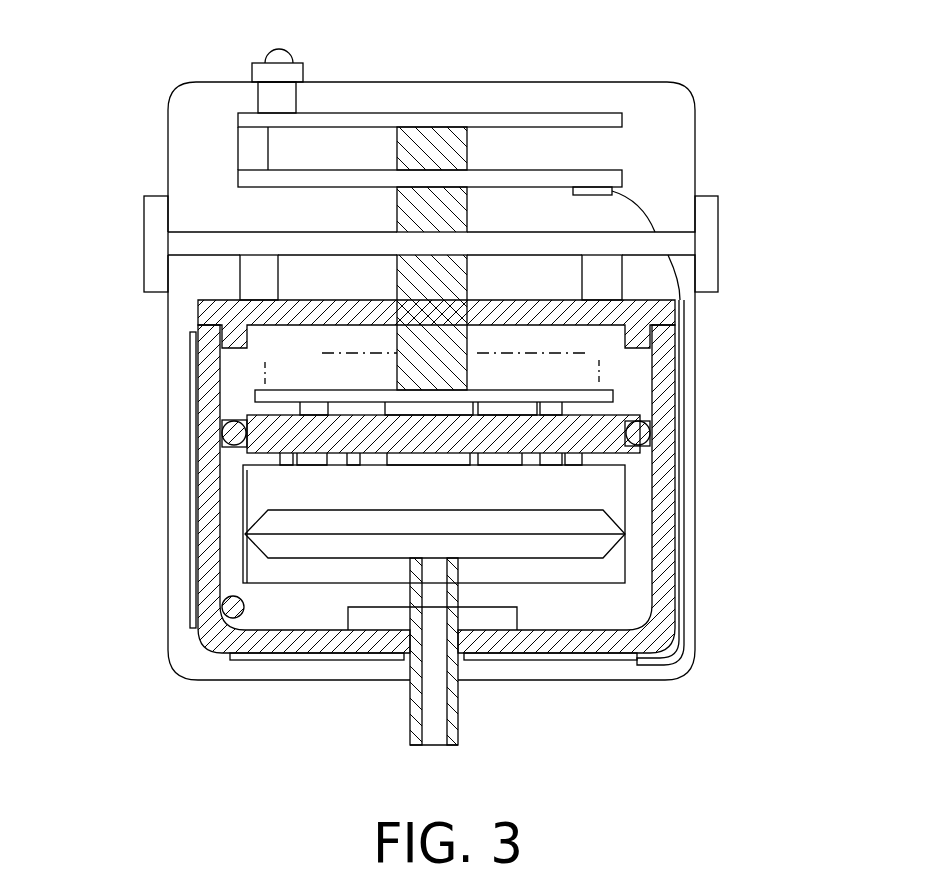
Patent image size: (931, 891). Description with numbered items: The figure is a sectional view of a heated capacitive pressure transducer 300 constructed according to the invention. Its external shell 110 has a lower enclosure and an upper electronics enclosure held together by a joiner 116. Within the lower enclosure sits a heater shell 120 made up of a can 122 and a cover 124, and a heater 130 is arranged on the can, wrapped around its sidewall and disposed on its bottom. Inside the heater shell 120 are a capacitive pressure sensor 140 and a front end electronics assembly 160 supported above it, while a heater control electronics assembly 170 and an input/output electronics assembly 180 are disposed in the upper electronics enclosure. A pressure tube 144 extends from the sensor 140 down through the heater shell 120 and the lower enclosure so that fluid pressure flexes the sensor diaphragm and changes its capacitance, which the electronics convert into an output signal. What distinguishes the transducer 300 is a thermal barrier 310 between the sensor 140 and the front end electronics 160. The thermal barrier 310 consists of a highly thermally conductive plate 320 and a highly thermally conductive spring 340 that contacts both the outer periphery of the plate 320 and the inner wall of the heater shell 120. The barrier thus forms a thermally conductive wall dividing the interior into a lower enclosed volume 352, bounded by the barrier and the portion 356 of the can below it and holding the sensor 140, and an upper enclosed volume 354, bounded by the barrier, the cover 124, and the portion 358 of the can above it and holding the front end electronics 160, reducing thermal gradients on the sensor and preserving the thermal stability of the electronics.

The external shell 110 is at (307, 682).
The joiner 116 is at (143, 240).
The heater shell 120 is at (208, 645).
The can 122 is at (198, 632).
The cover 124 is at (198, 312).
The heater 130 is at (692, 562).
The capacitive pressure sensor 140 is at (630, 500).
The pressure tube 144 is at (460, 727).
The front end electronics assembly 160 is at (615, 396).
The heater control electronics assembly 170 is at (508, 170).
The input/output electronics assembly 180 is at (553, 113).
The heated capacitive transducer 300 is at (743, 179).
The thermal barrier 310 is at (236, 412).
The highly thermally conductive plate 320 is at (236, 455).
The highly thermally conductive spring 340 is at (222, 433).
The lower enclosed volume 352 is at (323, 626).
The upper enclosed volume 354 is at (309, 362).
The portion of the can below the thermal barrier 356 is at (655, 598).
The portion of the can above the thermal barrier 358 is at (642, 365).